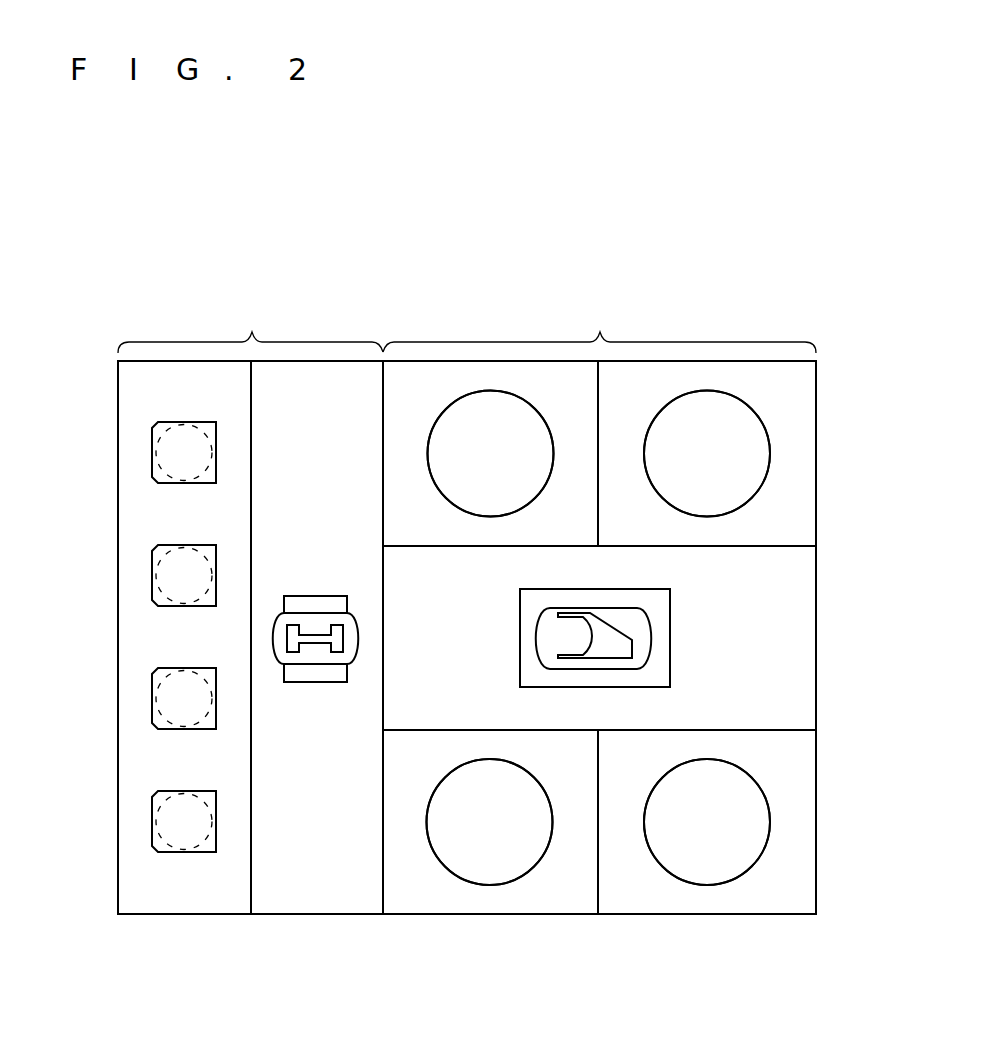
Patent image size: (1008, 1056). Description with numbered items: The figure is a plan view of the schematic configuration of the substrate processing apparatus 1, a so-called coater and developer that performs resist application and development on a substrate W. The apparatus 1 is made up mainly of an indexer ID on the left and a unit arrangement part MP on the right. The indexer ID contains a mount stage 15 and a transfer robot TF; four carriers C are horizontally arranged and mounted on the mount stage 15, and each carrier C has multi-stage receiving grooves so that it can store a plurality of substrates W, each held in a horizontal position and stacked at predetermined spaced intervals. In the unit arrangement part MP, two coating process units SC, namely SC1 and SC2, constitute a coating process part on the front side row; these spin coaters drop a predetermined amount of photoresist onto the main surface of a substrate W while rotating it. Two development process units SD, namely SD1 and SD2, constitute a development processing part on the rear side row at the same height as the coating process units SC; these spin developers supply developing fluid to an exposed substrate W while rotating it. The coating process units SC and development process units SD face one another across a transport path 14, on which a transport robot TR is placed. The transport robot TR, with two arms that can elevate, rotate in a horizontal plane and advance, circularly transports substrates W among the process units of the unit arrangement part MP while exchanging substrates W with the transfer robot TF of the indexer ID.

The substrate processing apparatus 1 is at (832, 468).
The transport path 14 is at (783, 695).
The mount stage 15 is at (186, 905).
The indexer ID is at (250, 326).
The unit arrangement part MP is at (599, 325).
The development process unit SD1 is at (459, 362).
The development process unit SD2 is at (750, 362).
The development process unit SD is at (599, 454).
The coating process unit SC1 is at (550, 916).
The coating process unit SC2 is at (748, 916).
The coating process unit SC is at (599, 822).
The transport robot TR is at (672, 635).
The transfer robot TF is at (302, 702).
The carrier C is at (152, 470).
The substrate W is at (92, 411).